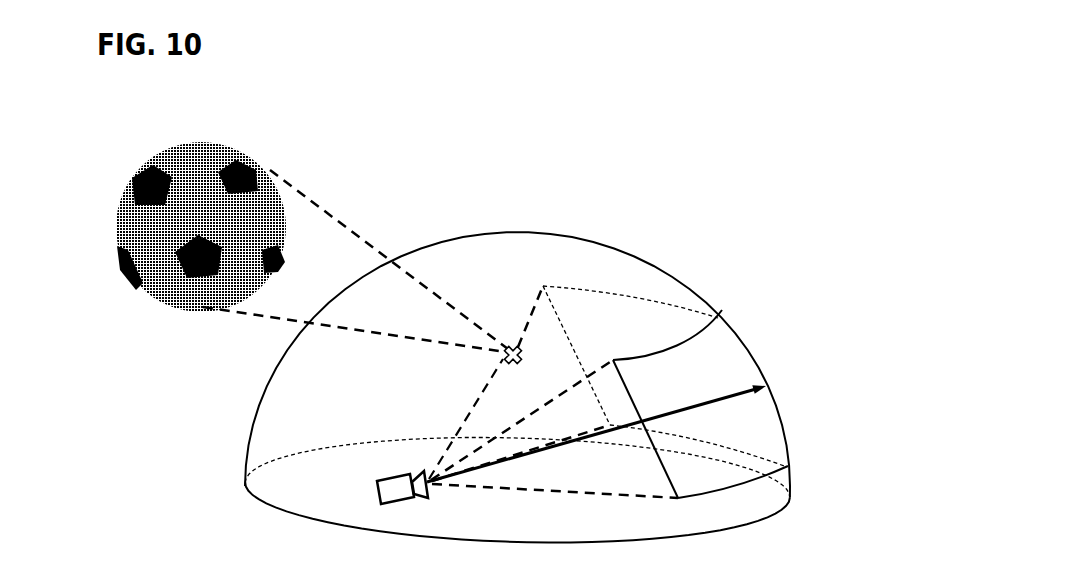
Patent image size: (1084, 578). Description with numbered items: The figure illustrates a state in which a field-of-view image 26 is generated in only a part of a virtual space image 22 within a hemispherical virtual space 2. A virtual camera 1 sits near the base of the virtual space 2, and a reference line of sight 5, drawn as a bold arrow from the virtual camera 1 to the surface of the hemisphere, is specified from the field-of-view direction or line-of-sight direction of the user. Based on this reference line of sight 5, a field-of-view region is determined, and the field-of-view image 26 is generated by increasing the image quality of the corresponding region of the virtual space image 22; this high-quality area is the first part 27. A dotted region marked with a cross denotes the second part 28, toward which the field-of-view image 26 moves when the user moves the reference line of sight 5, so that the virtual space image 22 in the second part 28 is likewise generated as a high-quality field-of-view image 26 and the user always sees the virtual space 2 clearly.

The virtual camera 1 is at (393, 486).
The virtual space 2 is at (540, 228).
The reference line of sight 5 is at (745, 388).
The virtual space image 22 is at (257, 425).
The field-of-view image 26 is at (762, 390).
The first part 27 is at (717, 342).
The second part 28 is at (512, 345).